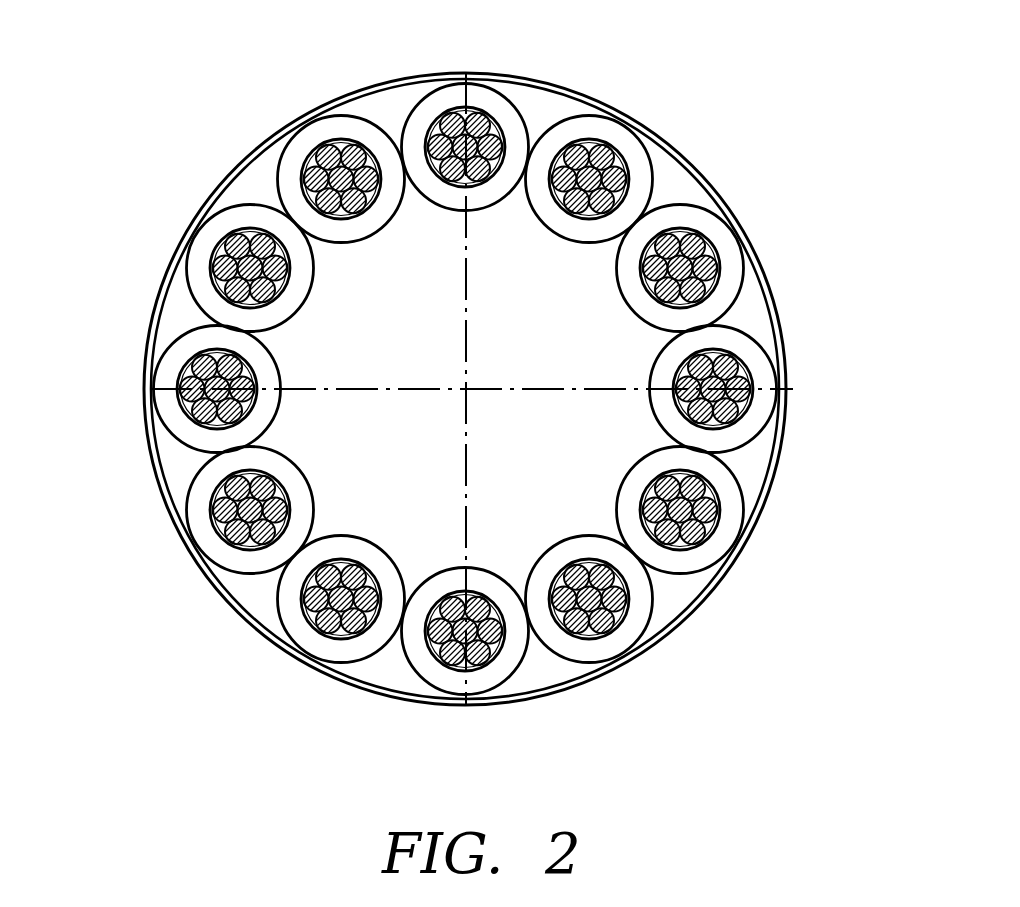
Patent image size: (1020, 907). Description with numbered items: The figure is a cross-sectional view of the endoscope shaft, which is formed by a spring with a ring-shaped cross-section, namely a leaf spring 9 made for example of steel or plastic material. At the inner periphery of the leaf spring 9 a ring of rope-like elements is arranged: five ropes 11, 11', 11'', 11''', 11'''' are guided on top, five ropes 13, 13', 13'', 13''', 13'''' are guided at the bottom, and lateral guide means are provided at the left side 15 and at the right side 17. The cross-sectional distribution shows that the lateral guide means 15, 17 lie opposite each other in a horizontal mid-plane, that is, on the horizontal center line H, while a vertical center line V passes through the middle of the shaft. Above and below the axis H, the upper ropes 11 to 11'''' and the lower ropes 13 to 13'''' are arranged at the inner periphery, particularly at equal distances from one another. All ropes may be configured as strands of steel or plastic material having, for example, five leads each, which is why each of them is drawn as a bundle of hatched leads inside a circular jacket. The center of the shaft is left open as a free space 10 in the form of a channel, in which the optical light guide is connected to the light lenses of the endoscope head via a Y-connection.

The leaf spring 9 is at (368, 707).
The free space 10 is at (545, 362).
The vertical axis V is at (505, 73).
The horizontal center line H is at (793, 390).
The rope guided on top 11 is at (710, 252).
The rope guided on top 11' is at (613, 157).
The rope guided on top 11'' is at (429, 116).
The rope guided on top 11''' is at (308, 169).
The rope guided on top 11'''' is at (213, 256).
The rope guided at the bottom 13 is at (193, 521).
The rope guided at the bottom 13' is at (286, 611).
The rope guided at the bottom 13'' is at (493, 668).
The rope guided at the bottom 13''' is at (605, 636).
The rope guided at the bottom 13'''' is at (730, 514).
The lateral guide means at the left side 15 is at (180, 410).
The lateral guide means at the right side 17 is at (737, 355).